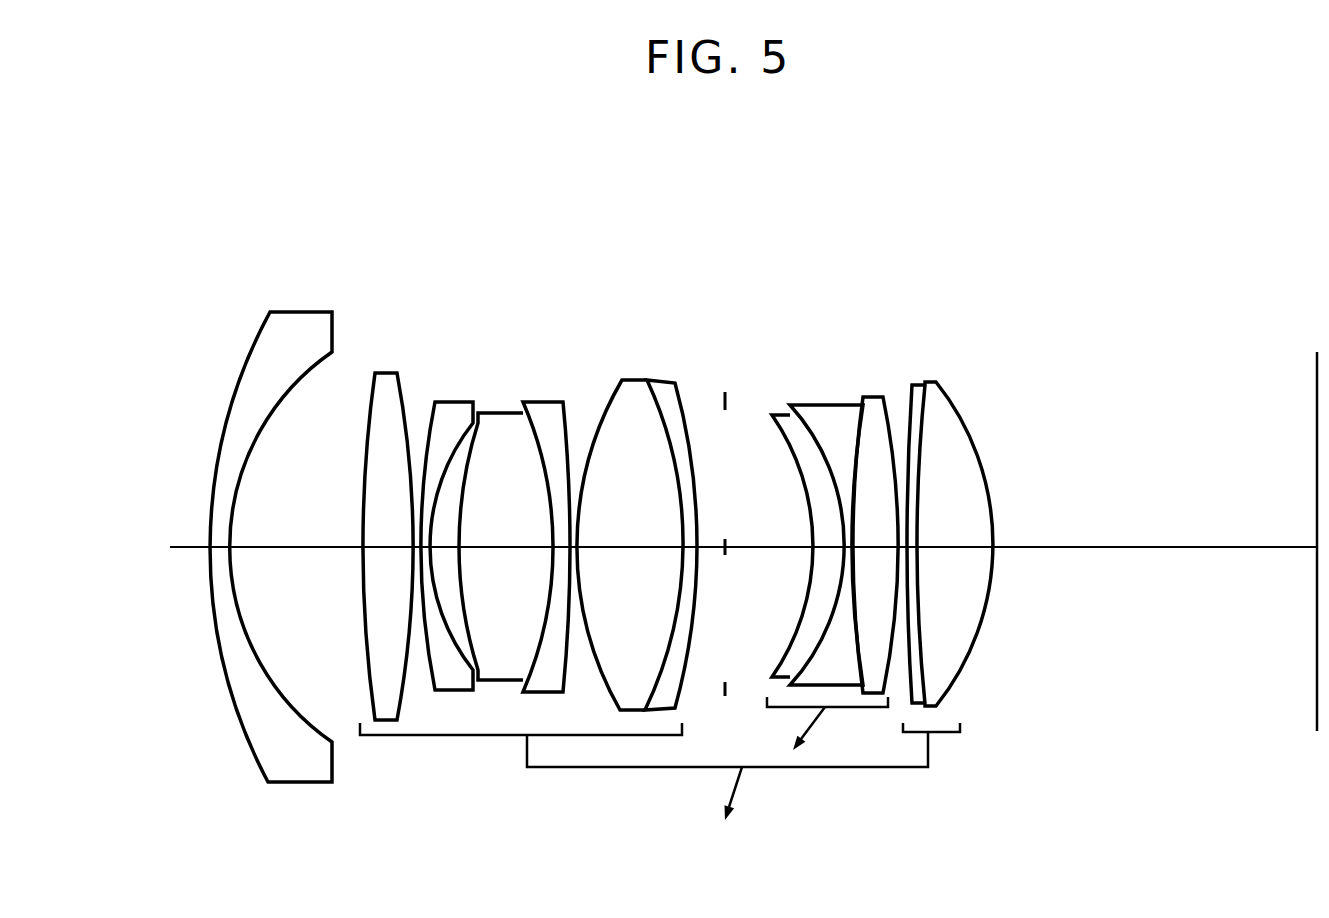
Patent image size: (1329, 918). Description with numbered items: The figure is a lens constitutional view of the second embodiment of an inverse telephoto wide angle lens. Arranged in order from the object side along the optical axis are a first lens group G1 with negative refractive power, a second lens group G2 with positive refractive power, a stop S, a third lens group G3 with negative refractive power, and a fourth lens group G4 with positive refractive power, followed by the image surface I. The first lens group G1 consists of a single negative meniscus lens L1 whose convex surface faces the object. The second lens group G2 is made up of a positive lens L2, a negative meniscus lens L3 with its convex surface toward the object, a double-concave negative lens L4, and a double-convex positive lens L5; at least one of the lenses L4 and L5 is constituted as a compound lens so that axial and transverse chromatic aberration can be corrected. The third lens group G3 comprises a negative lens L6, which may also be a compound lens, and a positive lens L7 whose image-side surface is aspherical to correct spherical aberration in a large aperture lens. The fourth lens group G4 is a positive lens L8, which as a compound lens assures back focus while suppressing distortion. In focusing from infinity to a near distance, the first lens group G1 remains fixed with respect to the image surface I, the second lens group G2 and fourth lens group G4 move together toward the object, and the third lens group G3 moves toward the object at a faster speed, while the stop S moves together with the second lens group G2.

The first lens group G1 is at (305, 226).
The second lens group G2 is at (643, 240).
The third lens group G3 is at (905, 263).
The fourth lens group G4 is at (957, 273).
The negative meniscus lens L1 is at (304, 320).
The positive lens L2 is at (393, 377).
The negative meniscus lens L3 is at (457, 407).
The double-concave negative lens L4 is at (573, 376).
The double-convex positive lens L5 is at (683, 348).
The negative lens L6 is at (862, 365).
The positive lens L7 is at (875, 400).
The positive lens L8 is at (902, 358).
The stop S is at (723, 392).
The image surface I is at (1316, 350).